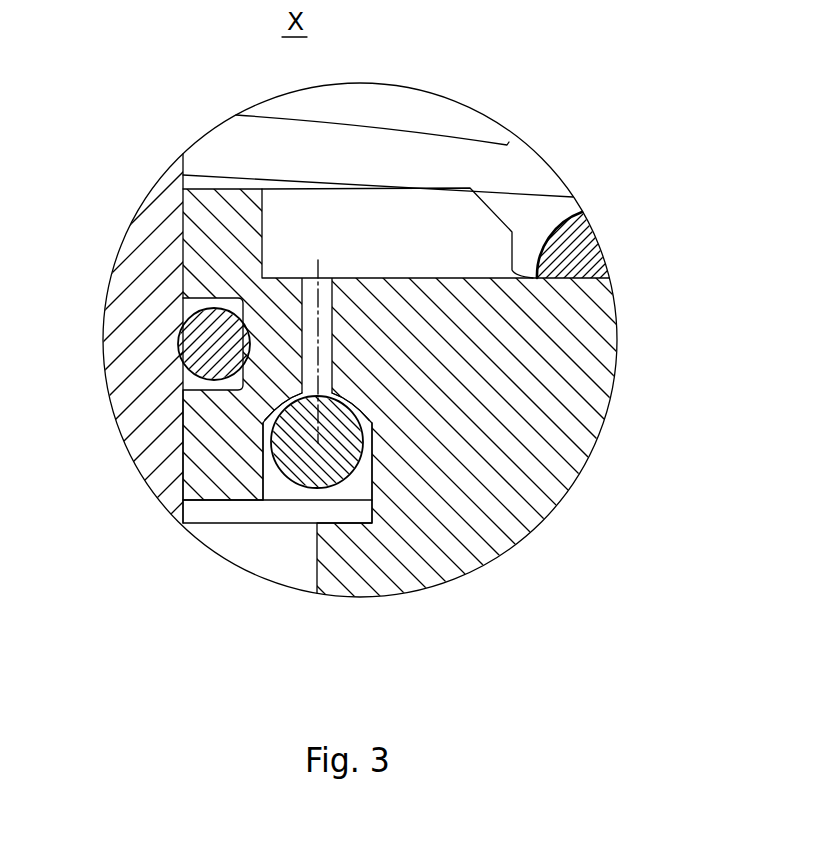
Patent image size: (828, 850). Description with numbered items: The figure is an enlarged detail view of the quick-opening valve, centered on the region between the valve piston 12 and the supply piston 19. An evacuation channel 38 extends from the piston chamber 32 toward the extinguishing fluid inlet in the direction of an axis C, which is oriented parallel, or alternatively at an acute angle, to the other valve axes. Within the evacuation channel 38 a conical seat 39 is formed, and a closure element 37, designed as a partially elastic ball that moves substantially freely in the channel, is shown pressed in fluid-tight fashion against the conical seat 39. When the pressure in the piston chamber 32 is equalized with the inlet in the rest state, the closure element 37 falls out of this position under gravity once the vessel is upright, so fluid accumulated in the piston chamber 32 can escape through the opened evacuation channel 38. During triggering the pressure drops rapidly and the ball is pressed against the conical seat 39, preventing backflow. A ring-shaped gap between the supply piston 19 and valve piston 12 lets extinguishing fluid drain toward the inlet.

The valve piston 12 is at (547, 400).
The supply piston 19 is at (153, 262).
The piston chamber 32 is at (273, 202).
The closure element 37 is at (296, 466).
The evacuation channel 38 is at (323, 278).
The conical seat 39 is at (268, 400).
The axis C is at (318, 277).